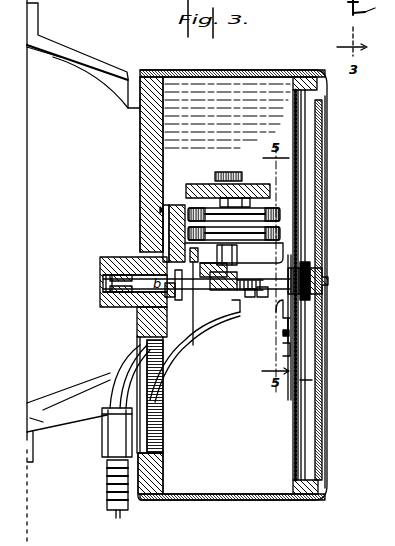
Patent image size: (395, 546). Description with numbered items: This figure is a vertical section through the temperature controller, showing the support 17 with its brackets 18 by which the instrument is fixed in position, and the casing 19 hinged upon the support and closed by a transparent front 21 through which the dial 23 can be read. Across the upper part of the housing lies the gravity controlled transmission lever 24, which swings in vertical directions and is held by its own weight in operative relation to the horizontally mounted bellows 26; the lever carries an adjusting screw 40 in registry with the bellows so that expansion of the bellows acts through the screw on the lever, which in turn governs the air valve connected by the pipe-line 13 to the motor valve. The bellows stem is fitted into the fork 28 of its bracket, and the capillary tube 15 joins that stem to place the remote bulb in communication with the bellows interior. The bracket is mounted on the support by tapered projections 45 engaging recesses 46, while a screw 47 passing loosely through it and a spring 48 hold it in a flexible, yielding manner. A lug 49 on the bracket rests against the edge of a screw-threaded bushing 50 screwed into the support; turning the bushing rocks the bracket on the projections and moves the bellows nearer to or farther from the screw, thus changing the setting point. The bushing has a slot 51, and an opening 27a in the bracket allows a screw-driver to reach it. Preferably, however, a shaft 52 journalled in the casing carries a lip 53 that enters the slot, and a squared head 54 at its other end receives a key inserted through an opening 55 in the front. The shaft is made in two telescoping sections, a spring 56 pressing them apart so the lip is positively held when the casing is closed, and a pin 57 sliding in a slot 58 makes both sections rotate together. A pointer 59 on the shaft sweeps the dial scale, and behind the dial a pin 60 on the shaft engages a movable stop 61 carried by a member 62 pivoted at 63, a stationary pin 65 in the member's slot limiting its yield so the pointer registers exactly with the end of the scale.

The pipe-line 13 is at (380, 9).
The capillary tube 15 is at (155, 380).
The support 17 is at (140, 172).
The brackets 18 is at (80, 60).
The casing 19 is at (258, 72).
The transparent front 21 is at (322, 187).
The dial 23 is at (305, 388).
The transmission lever 24 is at (197, 184).
The bellows 26 is at (282, 233).
The opening 27a is at (200, 345).
The fork 28 is at (218, 260).
The adjusting screw 40 is at (229, 172).
The tapered projections 45 is at (163, 210).
The recesses 46 is at (169, 230).
The screw 47 is at (186, 284).
The spring 48 is at (183, 252).
The lug 49 is at (150, 322).
The bushing 50 is at (137, 313).
The slot 51 is at (103, 280).
The shaft 52 is at (240, 317).
The lip 53 is at (110, 290).
The squared head 54 is at (328, 283).
The opening 55 is at (312, 282).
The spring 56 is at (258, 272).
The pin 57 is at (262, 297).
The slot 58 is at (248, 297).
The pointer 59 is at (300, 150).
The pin 60 is at (292, 270).
The stop 61 is at (286, 328).
The member 62 is at (262, 371).
The pivot 63 is at (292, 350).
The stationary pin 65 is at (292, 323).